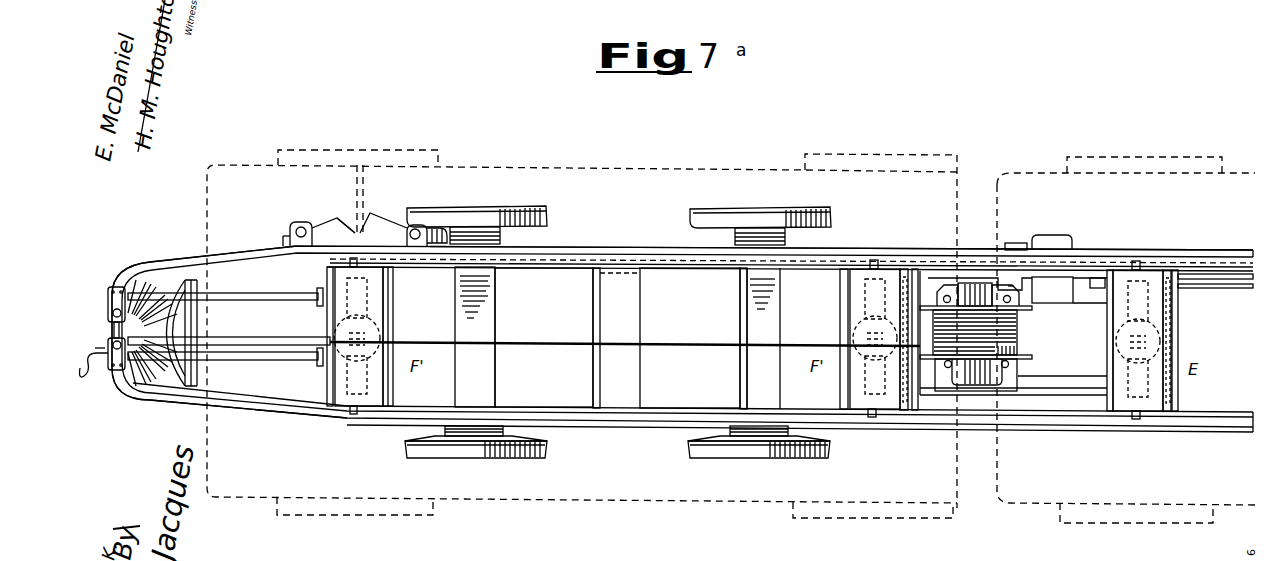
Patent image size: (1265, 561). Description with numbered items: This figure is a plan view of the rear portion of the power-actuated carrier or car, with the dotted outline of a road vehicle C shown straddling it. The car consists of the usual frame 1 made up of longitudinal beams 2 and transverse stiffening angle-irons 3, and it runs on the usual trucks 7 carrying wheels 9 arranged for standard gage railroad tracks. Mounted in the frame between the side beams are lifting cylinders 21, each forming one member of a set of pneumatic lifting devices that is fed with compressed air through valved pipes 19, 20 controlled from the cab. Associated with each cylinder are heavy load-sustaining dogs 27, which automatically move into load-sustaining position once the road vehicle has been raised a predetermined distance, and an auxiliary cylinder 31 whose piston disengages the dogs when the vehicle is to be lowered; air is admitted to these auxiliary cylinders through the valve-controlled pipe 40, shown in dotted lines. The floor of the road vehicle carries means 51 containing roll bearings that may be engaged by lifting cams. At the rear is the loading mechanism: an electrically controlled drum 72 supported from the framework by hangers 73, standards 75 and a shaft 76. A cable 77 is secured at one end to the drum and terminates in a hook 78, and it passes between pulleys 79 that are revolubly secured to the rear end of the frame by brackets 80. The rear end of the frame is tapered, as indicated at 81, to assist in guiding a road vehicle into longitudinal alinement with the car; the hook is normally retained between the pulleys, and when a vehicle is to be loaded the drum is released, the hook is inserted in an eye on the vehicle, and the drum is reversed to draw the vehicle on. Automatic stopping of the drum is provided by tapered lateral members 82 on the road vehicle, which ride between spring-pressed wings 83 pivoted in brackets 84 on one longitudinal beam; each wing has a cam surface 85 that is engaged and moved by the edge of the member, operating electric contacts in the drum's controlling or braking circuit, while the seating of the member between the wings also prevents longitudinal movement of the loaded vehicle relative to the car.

The frame 1 is at (225, 331).
The longitudinal beams 2 is at (605, 252).
The transverse stiffening angle-irons 3 is at (320, 383).
The trucks 7 is at (497, 318).
The wheels 9 is at (547, 213).
The valved pipe 19 is at (1210, 286).
The valved pipe 20 is at (702, 277).
The cylinder 21 is at (394, 320).
The dogs 27 is at (350, 414).
The cylinder 31 is at (320, 328).
The valve controlled pipe 40 is at (536, 250).
The means containing roll bearings 51 is at (613, 388).
The electrically controlled drum 72 is at (1022, 312).
The hangers 73 is at (1090, 296).
The standards 75 is at (942, 395).
The shaft 76 is at (978, 283).
The cable 77 is at (690, 346).
The hook 78 is at (88, 378).
The pulleys 79 is at (114, 334).
The brackets 80 is at (108, 302).
The tapered rear end 81 is at (208, 262).
The lateral members 82 is at (350, 182).
The wings 83 is at (355, 230).
The brackets 84 is at (307, 243).
The cam surface 85 is at (371, 214).
The road vehicle C is at (762, 505).